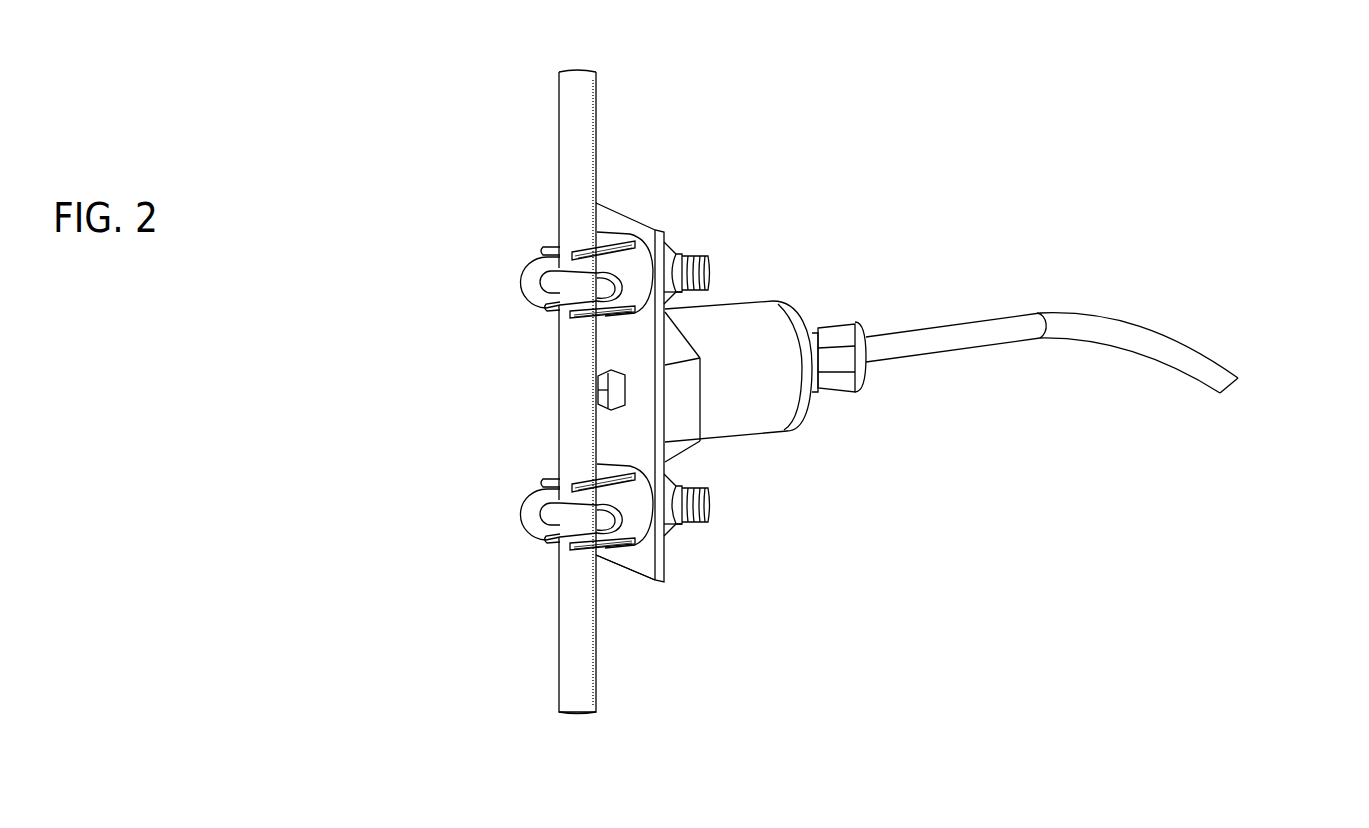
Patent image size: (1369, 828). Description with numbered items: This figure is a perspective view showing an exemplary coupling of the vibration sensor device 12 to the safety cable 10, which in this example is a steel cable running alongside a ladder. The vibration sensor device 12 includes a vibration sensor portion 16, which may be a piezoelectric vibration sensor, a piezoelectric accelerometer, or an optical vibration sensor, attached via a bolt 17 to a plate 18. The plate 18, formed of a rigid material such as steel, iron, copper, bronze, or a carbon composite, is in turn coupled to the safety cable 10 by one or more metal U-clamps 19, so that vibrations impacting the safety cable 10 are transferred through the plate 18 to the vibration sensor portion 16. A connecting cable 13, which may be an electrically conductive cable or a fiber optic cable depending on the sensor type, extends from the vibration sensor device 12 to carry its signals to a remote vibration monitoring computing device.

The safety cable 10 is at (538, 155).
The vibration sensor device 12 is at (1101, 63).
The connecting cable 13 is at (1178, 322).
The vibration sensor portion 16 is at (761, 322).
The bolt 17 is at (640, 399).
The plate 18 is at (680, 564).
The metal U-clamps 19 is at (500, 282).